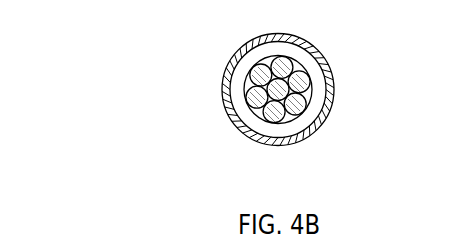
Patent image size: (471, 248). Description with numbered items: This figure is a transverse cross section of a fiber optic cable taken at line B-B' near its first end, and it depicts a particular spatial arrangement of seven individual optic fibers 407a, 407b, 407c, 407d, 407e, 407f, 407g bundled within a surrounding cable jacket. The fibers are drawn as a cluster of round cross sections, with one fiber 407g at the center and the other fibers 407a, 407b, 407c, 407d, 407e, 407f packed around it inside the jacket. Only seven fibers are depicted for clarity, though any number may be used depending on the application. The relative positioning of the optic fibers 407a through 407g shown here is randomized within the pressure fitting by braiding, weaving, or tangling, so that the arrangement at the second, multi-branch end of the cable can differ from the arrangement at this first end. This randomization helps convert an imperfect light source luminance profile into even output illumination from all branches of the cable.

The optic fiber 407a is at (254, 68).
The optic fiber 407b is at (290, 62).
The optic fiber 407c is at (305, 91).
The optic fiber 407d is at (301, 112).
The optic fiber 407e is at (270, 119).
The optic fiber 407f is at (256, 100).
The optic fiber 407g is at (278, 89).